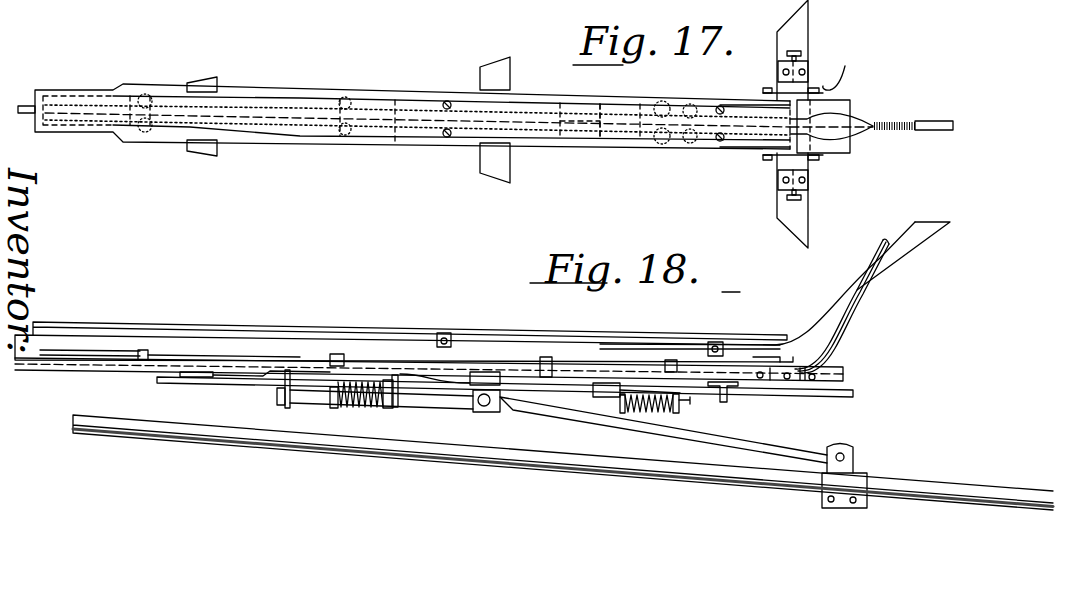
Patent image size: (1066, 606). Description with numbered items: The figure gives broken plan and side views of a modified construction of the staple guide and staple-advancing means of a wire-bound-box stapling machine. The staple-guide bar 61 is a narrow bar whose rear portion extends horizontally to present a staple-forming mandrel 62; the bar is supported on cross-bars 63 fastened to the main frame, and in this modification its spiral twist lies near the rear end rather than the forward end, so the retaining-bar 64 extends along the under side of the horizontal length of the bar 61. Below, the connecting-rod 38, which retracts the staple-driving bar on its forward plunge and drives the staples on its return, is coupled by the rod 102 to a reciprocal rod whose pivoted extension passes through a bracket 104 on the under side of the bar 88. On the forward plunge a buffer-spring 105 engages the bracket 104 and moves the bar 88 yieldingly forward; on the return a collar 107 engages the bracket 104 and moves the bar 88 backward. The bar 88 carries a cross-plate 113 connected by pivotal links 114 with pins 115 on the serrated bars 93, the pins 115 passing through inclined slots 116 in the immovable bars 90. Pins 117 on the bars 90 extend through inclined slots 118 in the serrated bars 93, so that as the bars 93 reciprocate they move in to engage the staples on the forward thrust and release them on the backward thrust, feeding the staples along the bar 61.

In FIG. 18, the connecting-rod 38 is at (644, 470).
In FIG. 17, the staple-guide bar 61 is at (393, 112).
In FIG. 18, the staple-guide bar 61 is at (375, 345).
In FIG. 17, the staple-forming mandrel 62 is at (930, 125).
In FIG. 18, the staple-forming mandrel 62 is at (930, 218).
In FIG. 17, the cross-bars 63 is at (217, 80).
In FIG. 18, the cross-bars 63 is at (208, 378).
In FIG. 18, the retaining-bar 64 is at (838, 332).
In FIG. 18, the bar 88 is at (840, 388).
In FIG. 18, the immovable bars 90 is at (187, 358).
In FIG. 17, the serrated bars 93 is at (458, 95).
In FIG. 18, the serrated bars 93 is at (152, 370).
In FIG. 18, the rod 102 is at (744, 443).
In FIG. 18, the bracket 104 is at (620, 412).
In FIG. 18, the buffer-spring 105 is at (636, 410).
In FIG. 18, the collar 107 is at (620, 396).
In FIG. 17, the cross-plate 113 is at (600, 150).
In FIG. 18, the cross-plate 113 is at (596, 394).
In FIG. 17, the pivotal links 114 is at (625, 110).
In FIG. 18, the pivotal links 114 is at (715, 405).
In FIG. 17, the pins 115 is at (720, 100).
In FIG. 18, the pins 115 is at (686, 357).
In FIG. 17, the slots 116 is at (683, 100).
In FIG. 18, the slots 116 is at (667, 355).
In FIG. 17, the pins 117 is at (340, 92).
In FIG. 18, the pins 117 is at (330, 360).
In FIG. 17, the inclined slots 118 is at (556, 106).
In FIG. 18, the inclined slots 118 is at (342, 355).